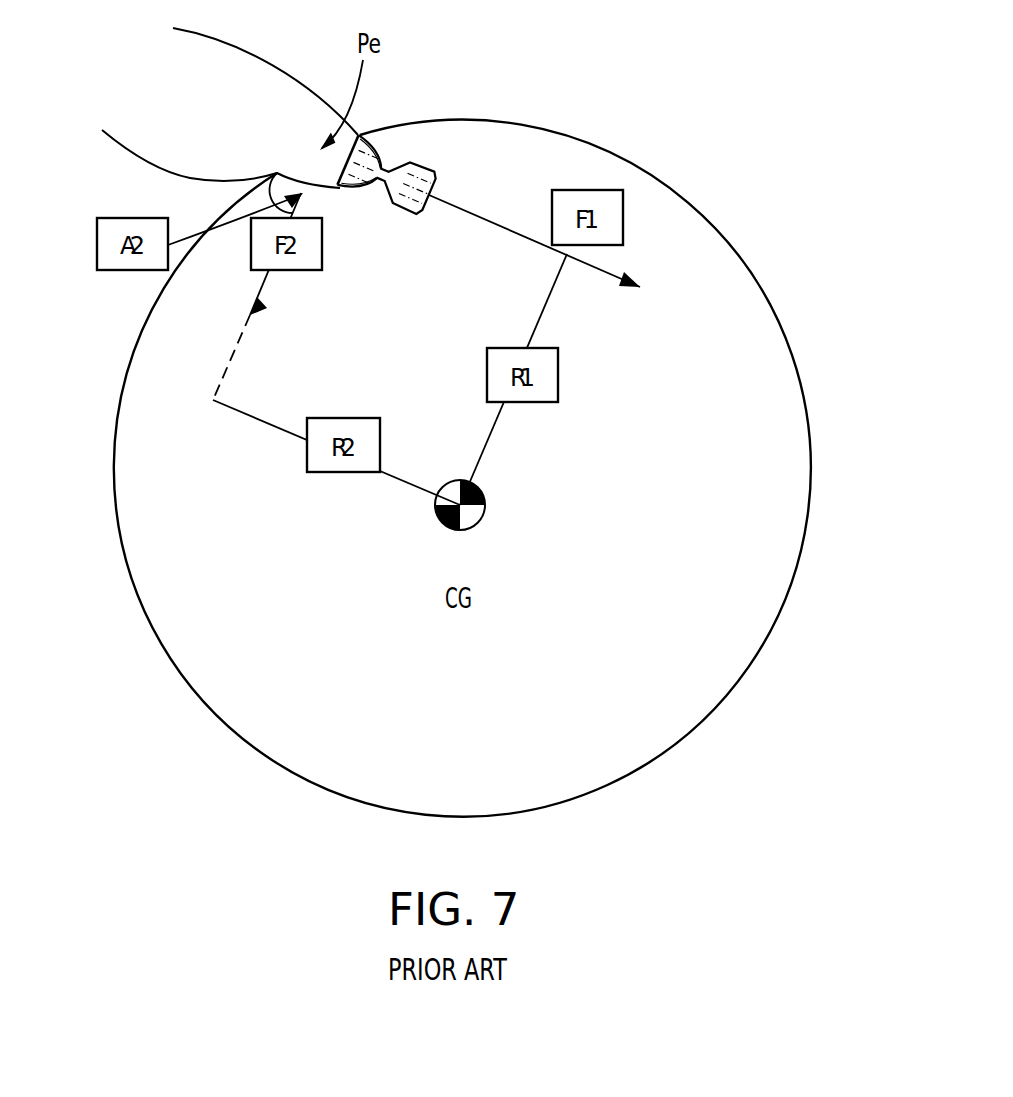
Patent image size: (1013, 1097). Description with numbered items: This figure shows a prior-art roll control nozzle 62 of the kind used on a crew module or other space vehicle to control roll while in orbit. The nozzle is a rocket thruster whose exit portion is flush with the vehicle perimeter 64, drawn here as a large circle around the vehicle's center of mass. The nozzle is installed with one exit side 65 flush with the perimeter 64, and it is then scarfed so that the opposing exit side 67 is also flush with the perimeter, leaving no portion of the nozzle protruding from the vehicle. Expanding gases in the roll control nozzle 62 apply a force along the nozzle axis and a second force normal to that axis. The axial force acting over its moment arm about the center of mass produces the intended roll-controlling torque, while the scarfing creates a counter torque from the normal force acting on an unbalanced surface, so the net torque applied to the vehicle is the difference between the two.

The roll control nozzle 62 is at (363, 172).
The vehicle perimeter 64 is at (668, 187).
The exit side 65 is at (290, 210).
The opposing exit side 67 is at (358, 135).